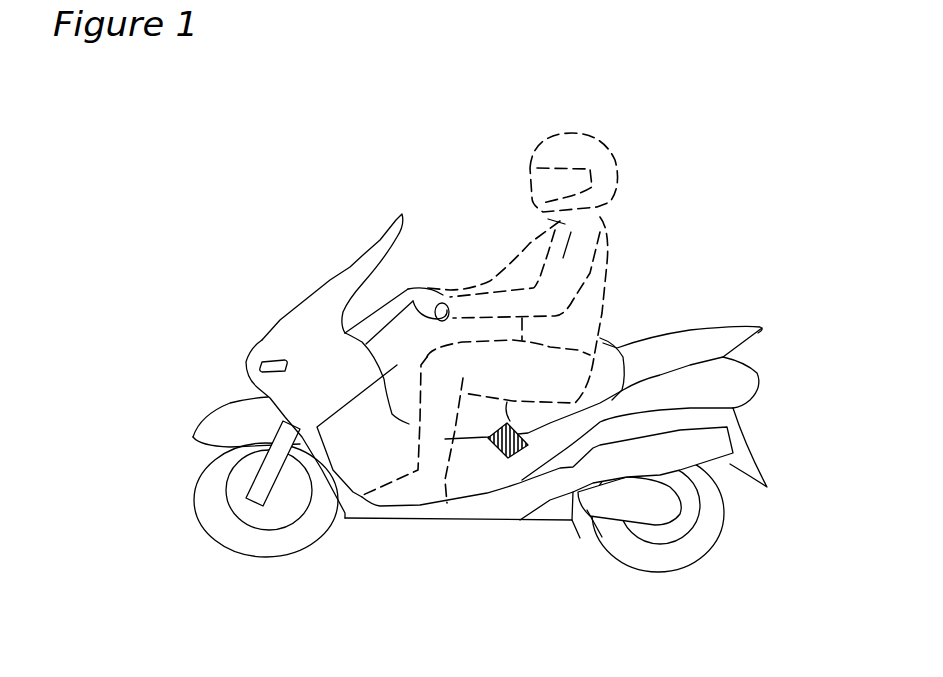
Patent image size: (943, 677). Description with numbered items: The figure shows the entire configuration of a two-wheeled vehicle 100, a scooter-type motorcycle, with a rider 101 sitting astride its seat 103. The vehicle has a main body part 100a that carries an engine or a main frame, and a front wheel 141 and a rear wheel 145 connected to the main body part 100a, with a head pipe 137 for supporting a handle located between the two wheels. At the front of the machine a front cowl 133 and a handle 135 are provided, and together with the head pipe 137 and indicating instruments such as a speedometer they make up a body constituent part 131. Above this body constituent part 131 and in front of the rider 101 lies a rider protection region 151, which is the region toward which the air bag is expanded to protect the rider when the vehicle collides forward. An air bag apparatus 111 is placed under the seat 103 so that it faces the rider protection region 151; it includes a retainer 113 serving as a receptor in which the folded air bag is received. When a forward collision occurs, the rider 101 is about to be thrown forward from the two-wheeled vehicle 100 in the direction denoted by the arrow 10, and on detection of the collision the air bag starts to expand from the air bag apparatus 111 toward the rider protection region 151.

The arrow 10 is at (617, 97).
The two-wheeled vehicle 100 is at (686, 243).
The main body part of a two-wheeled vehicle 100a is at (350, 450).
The rider 101 is at (622, 232).
The seat 103 is at (613, 335).
The air bag apparatus 111 is at (535, 463).
The retainer 113 is at (507, 433).
The body constituent part 131 is at (378, 417).
The front cowl 133 is at (323, 292).
The handle 135 is at (415, 285).
The head pipe for supporting a handle 137 is at (277, 440).
The front wheel 141 is at (210, 522).
The rear wheel 145 is at (707, 542).
The rider protection region 151 is at (488, 196).